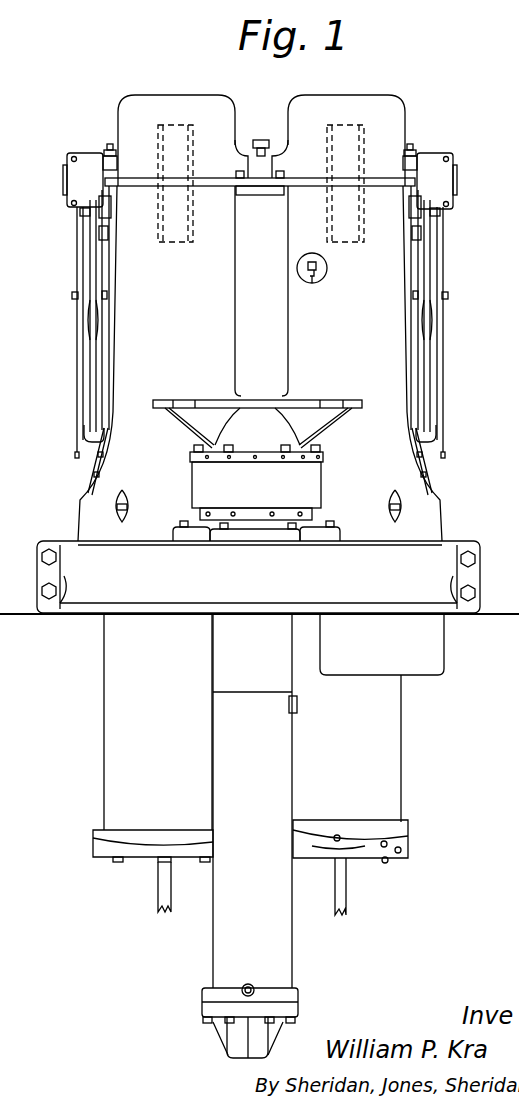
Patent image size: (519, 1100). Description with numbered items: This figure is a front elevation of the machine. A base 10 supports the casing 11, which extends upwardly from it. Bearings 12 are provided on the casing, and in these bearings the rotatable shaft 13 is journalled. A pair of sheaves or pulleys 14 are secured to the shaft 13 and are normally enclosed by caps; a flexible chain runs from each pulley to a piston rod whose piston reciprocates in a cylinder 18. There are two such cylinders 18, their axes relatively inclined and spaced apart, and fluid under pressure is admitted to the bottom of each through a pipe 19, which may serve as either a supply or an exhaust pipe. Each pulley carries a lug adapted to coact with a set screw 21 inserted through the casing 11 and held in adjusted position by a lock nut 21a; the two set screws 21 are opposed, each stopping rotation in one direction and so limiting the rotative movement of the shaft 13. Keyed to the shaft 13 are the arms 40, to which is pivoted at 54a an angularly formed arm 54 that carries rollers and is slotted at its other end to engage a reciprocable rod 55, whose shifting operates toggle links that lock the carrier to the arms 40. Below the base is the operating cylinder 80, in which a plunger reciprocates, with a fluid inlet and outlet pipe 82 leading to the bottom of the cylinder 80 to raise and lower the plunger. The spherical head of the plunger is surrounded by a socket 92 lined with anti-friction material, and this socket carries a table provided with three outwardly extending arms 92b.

The base 10 is at (259, 577).
The casing 11 is at (260, 318).
The bearings 12 is at (108, 150).
The rotatable shaft 13 is at (65, 176).
The sheaves or pulleys 14 is at (172, 125).
The cylinder 18 is at (268, 738).
The pipe 19 is at (158, 888).
The set screw 21 is at (316, 277).
The lock nut 21a is at (327, 268).
The arms 40 is at (77, 241).
The angularly formed arm 54 is at (90, 333).
The pivot 54a is at (72, 295).
The reciprocable rod 55 is at (88, 434).
The operating cylinder 80 is at (290, 942).
The fluid inlet and outlet pipe 82 is at (298, 990).
The socket 92 is at (262, 404).
The outwardly extending arms 92b is at (303, 407).